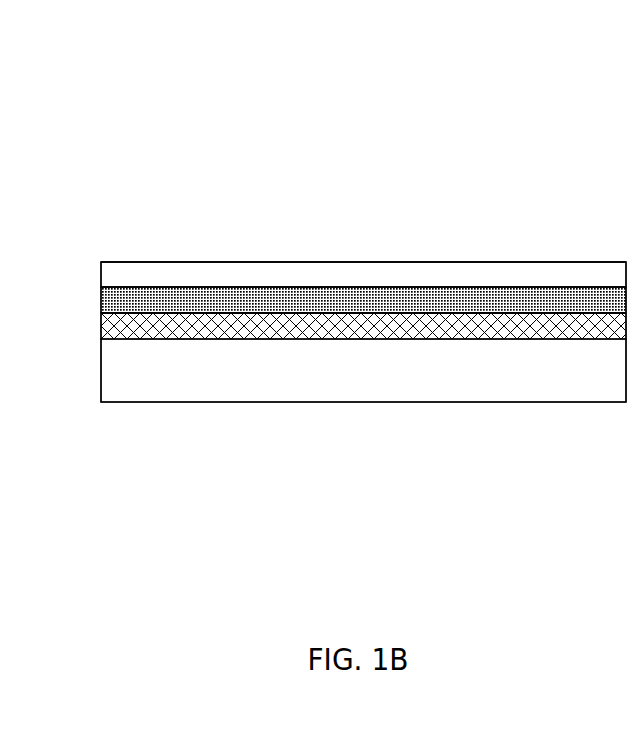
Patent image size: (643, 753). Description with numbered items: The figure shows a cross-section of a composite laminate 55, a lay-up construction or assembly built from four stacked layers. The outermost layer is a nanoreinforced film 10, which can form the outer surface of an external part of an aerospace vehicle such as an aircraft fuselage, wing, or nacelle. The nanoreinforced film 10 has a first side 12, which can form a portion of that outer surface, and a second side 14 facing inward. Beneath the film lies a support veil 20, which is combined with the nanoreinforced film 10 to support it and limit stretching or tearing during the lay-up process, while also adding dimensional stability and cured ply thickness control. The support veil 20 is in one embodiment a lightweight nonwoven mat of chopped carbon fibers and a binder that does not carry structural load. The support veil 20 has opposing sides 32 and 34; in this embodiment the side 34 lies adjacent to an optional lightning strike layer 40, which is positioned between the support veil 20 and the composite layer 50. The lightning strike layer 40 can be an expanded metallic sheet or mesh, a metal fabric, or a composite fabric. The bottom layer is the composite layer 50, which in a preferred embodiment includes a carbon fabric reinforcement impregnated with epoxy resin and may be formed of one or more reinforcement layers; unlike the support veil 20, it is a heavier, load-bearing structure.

The composite laminate 55 is at (313, 148).
The nanoreinforced film 10 is at (163, 277).
The first side 12 is at (238, 262).
The second side 14 is at (310, 295).
The support veil 20 is at (577, 296).
The side of support veil 32 is at (402, 288).
The side of support veil 34 is at (390, 313).
The lightning strike layer 40 is at (540, 327).
The composite layer 50 is at (302, 377).